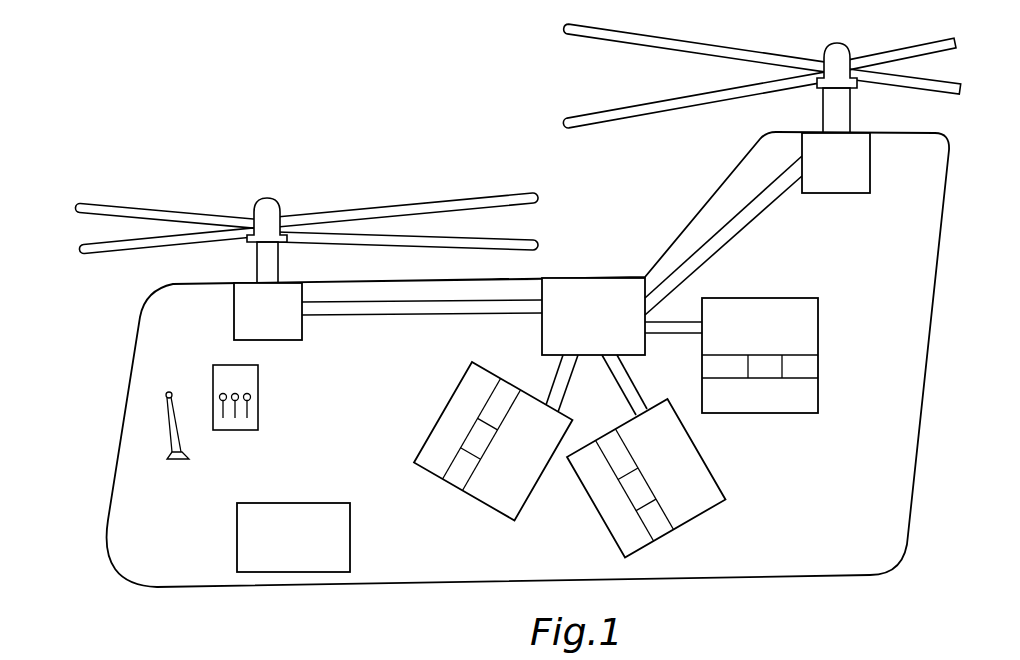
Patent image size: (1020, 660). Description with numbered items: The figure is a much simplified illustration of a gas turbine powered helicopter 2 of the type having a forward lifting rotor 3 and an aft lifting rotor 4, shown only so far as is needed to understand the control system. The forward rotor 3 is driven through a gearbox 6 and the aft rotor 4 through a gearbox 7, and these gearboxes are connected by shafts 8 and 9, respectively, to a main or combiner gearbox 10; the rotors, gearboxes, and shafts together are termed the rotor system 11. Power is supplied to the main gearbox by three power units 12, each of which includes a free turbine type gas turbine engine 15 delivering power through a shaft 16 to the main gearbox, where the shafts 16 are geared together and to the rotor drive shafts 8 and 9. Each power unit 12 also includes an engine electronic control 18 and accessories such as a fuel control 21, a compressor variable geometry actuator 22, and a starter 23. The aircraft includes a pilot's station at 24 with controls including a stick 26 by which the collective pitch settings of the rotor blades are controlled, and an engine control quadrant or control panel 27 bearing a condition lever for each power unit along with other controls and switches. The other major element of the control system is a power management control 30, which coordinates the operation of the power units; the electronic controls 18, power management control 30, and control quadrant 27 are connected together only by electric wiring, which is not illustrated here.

The helicopter 2 is at (137, 315).
The forward lifting rotor 3 is at (300, 220).
The aft lifting rotor 4 is at (707, 48).
The gearbox 6 is at (235, 317).
The gearbox 7 is at (870, 165).
The shaft 8 is at (428, 317).
The shaft 9 is at (722, 236).
The main or combiner gearbox 10 is at (612, 280).
The rotor system 11 is at (530, 131).
The power unit 12 is at (634, 412).
The gas turbine engine 15 is at (777, 303).
The shaft 16 is at (688, 329).
The engine electronic control 18 is at (752, 406).
The fuel control 21 is at (508, 392).
The compressor variable geometry actuator 22 is at (468, 452).
The starter 23 is at (463, 484).
The pilot's station 24 is at (244, 455).
The stick 26 is at (168, 425).
The engine control quadrant or control panel 27 is at (258, 376).
The power management control 30 is at (237, 522).